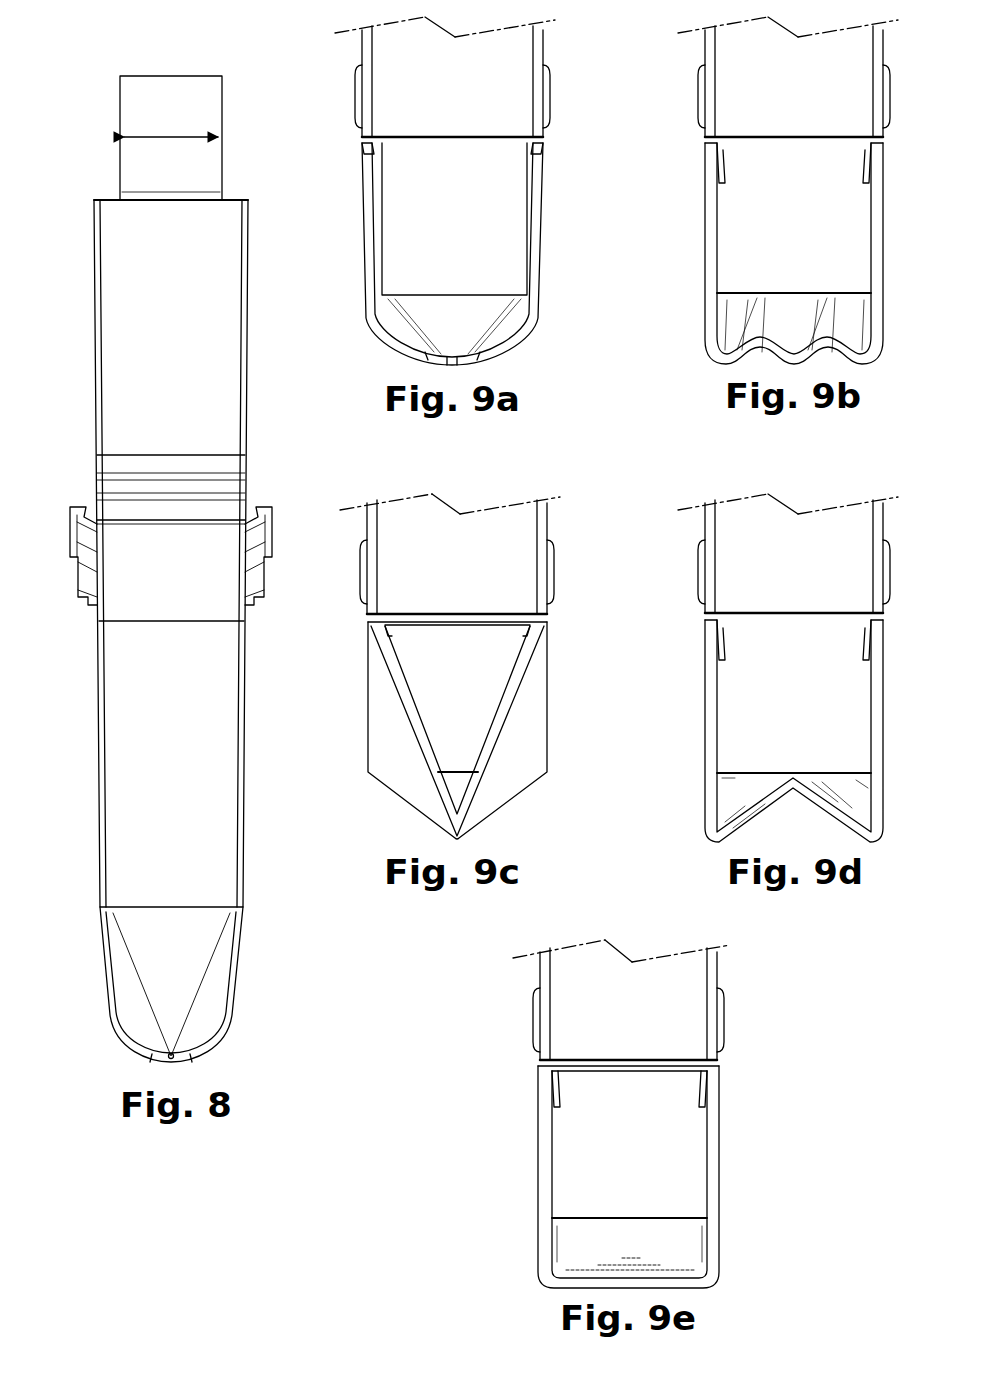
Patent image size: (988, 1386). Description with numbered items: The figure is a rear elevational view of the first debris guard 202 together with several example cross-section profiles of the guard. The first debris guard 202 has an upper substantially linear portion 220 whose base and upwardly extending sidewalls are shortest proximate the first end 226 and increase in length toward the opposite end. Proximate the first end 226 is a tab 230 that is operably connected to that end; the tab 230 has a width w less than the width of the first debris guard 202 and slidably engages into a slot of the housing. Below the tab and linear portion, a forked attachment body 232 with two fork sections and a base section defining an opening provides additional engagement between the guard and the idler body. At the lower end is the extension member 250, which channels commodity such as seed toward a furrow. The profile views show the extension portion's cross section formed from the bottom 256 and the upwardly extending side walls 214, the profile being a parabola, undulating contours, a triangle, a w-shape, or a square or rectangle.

In FIG. 8, the first debris guard 202 is at (90, 302).
In FIG. 9A, the upwardly extending side portions 214 is at (378, 196).
In FIG. 9B, the upwardly extending side portions 214 is at (710, 277).
In FIG. 9C, the upwardly extending side portions 214 is at (400, 695).
In FIG. 9D, the upwardly extending side portions 214 is at (885, 817).
In FIG. 9E, the upwardly extending side portions 214 is at (719, 1183).
In FIG. 8, the upper substantially linear portion 220 is at (149, 321).
In FIG. 8, the first end 226 is at (100, 200).
In FIG. 8, the tab 230 is at (178, 76).
In FIG. 8, the forked attachment body 232 is at (70, 531).
In FIG. 8, the extension member 250 is at (246, 1011).
In FIG. 9A, the bottom 256 is at (445, 333).
In FIG. 9B, the bottom 256 is at (840, 330).
In FIG. 9C, the bottom 256 is at (457, 797).
In FIG. 9D, the bottom 256 is at (871, 838).
In FIG. 9E, the bottom 256 is at (672, 1256).